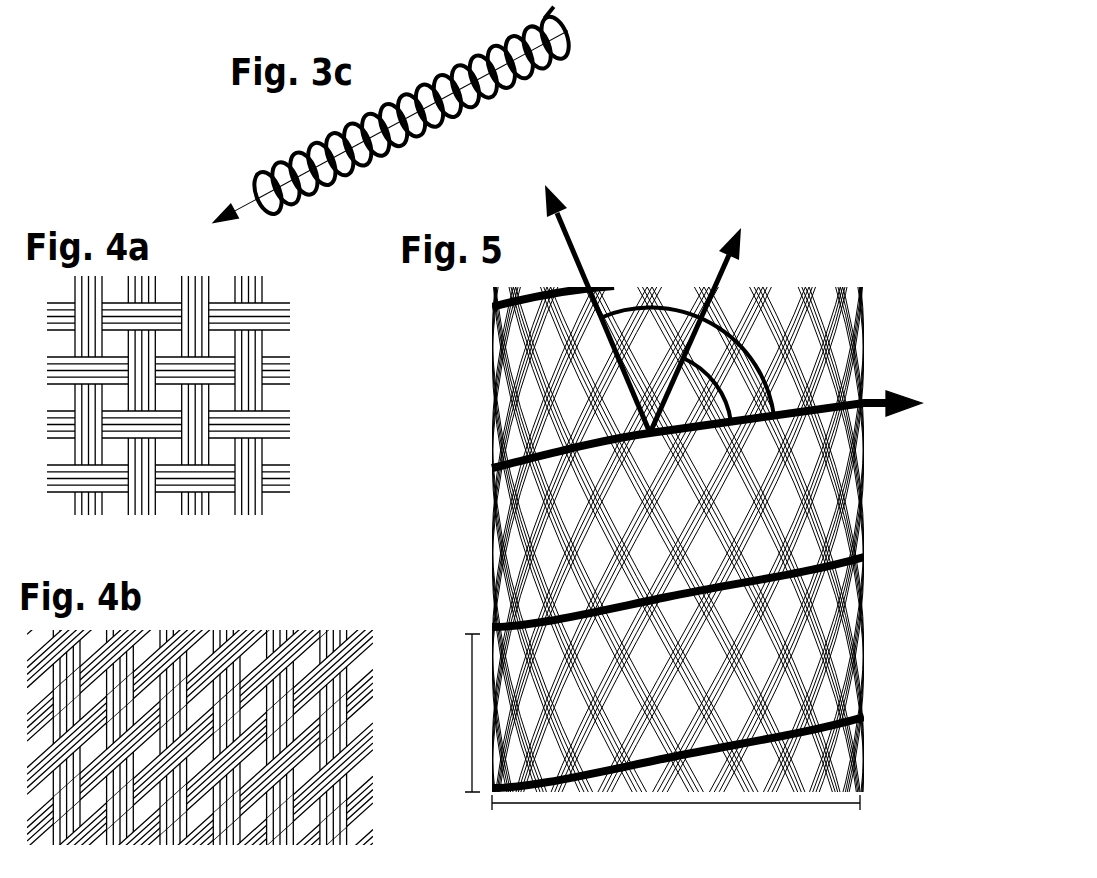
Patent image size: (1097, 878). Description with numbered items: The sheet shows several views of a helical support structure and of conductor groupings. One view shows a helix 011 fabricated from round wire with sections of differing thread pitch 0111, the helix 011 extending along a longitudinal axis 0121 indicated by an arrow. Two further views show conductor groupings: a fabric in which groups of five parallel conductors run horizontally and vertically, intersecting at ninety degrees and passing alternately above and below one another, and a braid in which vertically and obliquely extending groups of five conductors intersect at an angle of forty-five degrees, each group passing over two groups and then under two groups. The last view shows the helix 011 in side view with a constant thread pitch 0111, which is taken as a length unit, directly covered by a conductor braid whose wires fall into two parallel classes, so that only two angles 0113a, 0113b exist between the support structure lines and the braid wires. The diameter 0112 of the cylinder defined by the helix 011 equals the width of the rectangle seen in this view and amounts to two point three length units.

In FIG. 3C, the helix 011 is at (388, 100).
In FIG. 5, the helix 011 is at (627, 437).
In FIG. 3C, the longitudinal axis 0121 is at (250, 203).
In FIG. 5, the angle between support structure lines and braid wires 0113a is at (710, 367).
In FIG. 5, the angle between support structure lines and braid wires 0113b is at (642, 310).
In FIG. 5, the thread pitch 0111 is at (444, 713).
In FIG. 5, the diameter 0112 is at (676, 817).